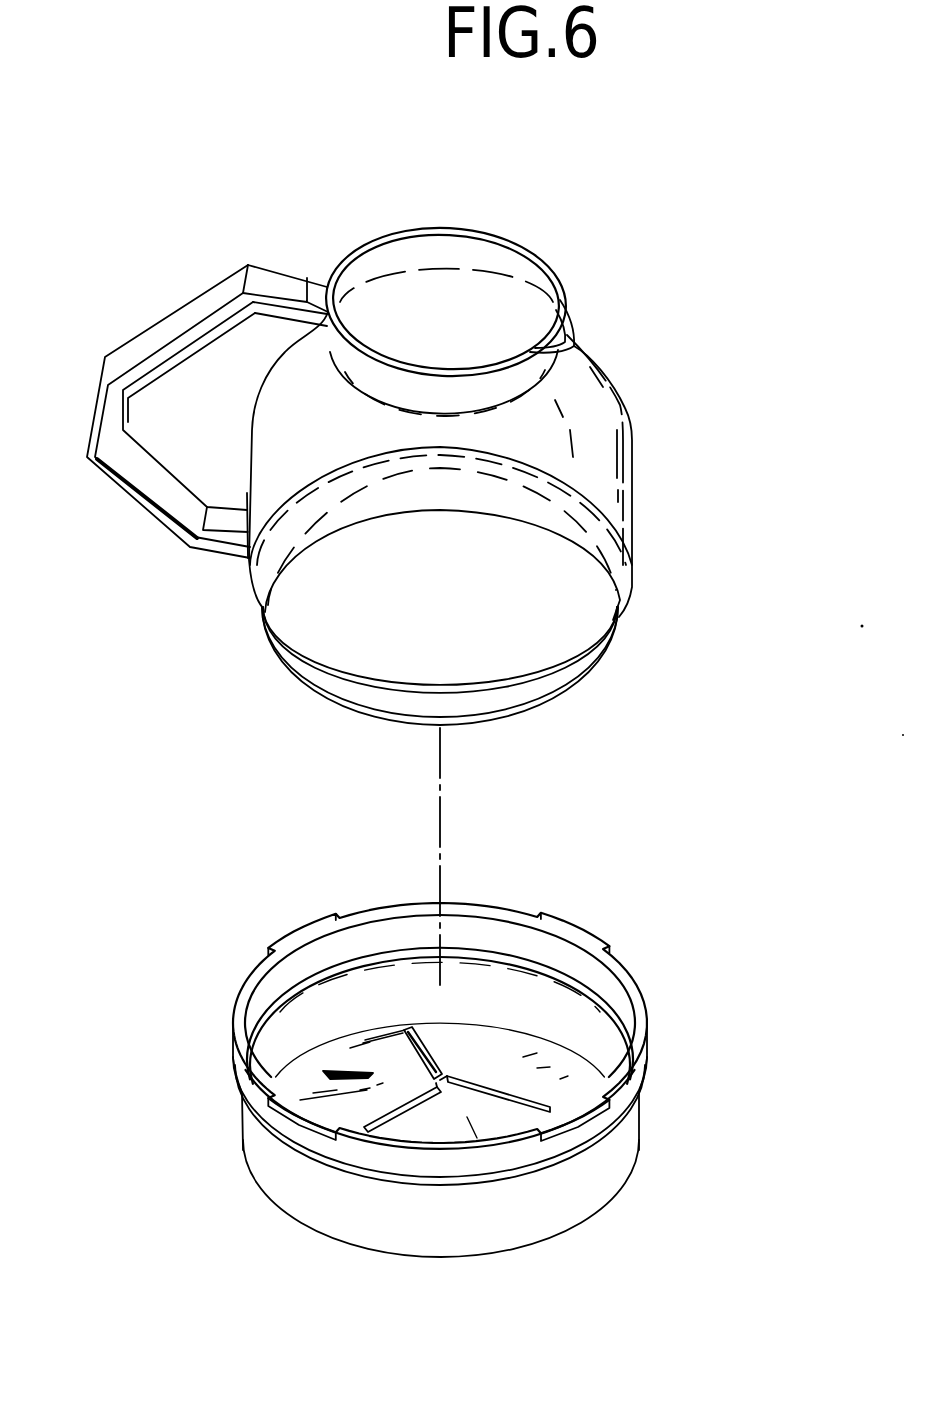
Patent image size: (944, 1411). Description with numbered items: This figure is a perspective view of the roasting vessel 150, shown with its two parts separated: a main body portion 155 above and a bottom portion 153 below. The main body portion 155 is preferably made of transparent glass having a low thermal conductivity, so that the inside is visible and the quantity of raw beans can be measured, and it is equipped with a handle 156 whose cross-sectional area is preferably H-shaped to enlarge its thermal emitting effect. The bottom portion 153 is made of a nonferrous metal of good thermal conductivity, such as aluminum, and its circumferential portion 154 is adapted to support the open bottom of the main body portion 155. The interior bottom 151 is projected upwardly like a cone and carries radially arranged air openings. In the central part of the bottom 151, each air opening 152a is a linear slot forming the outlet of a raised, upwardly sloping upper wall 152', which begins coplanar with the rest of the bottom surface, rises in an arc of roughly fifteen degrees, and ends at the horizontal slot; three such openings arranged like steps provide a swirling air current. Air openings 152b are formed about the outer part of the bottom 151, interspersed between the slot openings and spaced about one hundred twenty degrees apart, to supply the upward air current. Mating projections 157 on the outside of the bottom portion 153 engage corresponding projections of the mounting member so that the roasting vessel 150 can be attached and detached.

The roasting vessel 150 is at (772, 163).
The bottom 151 is at (567, 1048).
The upper sloping wall 152' is at (282, 1012).
The air opening 152a is at (393, 1112).
The air opening 152b is at (318, 1087).
The bottom portion 153 is at (522, 912).
The circumferential portion 154 is at (632, 1082).
The main body portion 155 is at (617, 427).
The handle 156 is at (168, 330).
The mating projection 157 is at (568, 1126).